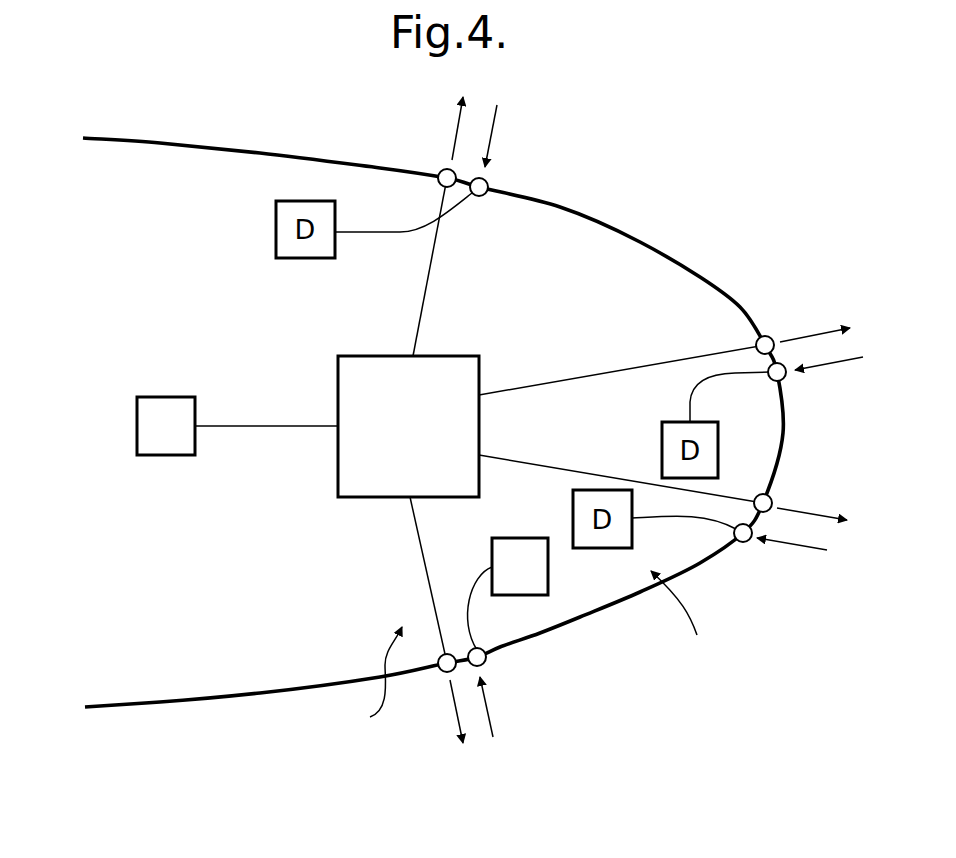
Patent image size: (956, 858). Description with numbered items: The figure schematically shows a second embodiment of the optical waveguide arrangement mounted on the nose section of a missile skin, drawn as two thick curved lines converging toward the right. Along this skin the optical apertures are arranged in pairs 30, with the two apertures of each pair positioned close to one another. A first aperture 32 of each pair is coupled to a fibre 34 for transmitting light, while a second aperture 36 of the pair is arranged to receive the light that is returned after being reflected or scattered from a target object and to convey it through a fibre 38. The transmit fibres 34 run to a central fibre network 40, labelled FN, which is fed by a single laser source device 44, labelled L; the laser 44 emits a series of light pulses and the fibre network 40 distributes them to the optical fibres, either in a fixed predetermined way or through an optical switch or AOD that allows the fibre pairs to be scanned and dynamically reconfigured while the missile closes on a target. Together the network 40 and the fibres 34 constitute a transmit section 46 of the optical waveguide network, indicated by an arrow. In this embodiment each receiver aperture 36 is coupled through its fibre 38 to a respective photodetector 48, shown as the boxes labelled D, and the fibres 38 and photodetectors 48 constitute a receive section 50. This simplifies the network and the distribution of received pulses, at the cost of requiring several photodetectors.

The aperture pair 30 is at (474, 708).
The first aperture 32 is at (442, 669).
The fibre 34 is at (420, 540).
The second aperture 36 is at (490, 664).
The fibre 38 is at (470, 620).
The fibre network 40 is at (350, 473).
The laser source device 44 is at (137, 425).
The transmit section 46 is at (377, 688).
The photodetector 48 is at (683, 617).
The receive section 50 is at (548, 575).